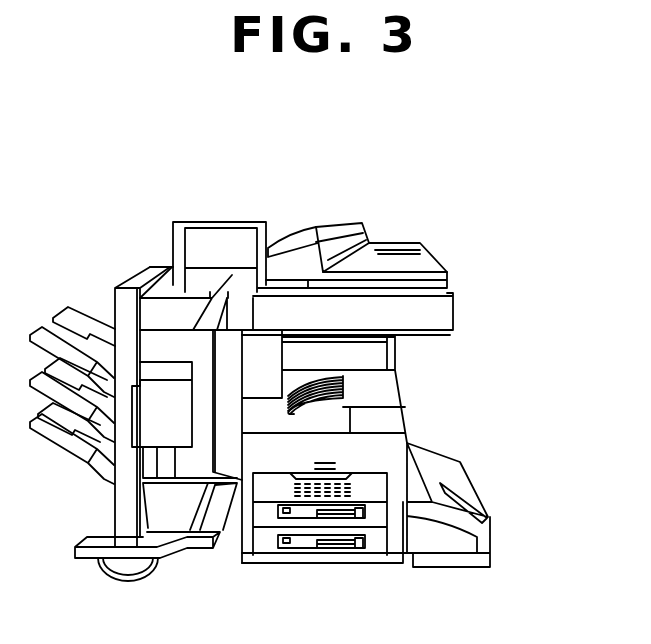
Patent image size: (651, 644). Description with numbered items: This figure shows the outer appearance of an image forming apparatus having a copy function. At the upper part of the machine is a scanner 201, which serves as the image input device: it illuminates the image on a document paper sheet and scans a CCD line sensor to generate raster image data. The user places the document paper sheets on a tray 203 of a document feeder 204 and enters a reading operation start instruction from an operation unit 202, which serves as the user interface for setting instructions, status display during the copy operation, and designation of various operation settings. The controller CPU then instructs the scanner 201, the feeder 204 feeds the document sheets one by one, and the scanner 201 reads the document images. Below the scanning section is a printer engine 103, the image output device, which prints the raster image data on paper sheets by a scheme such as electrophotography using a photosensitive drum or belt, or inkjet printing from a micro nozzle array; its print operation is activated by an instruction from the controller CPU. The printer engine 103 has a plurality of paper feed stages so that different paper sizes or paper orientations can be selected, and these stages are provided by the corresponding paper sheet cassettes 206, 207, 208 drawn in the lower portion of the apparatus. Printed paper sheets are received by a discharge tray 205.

The printer engine 103 is at (473, 330).
The scanner 201 is at (339, 377).
The operation unit 202 is at (268, 155).
The tray 203 is at (331, 226).
The document feeder 204 is at (398, 243).
The discharge tray 205 is at (345, 389).
The paper sheet cassette 206 is at (301, 514).
The paper sheet cassette 207 is at (375, 546).
The paper sheet cassette 208 is at (454, 548).